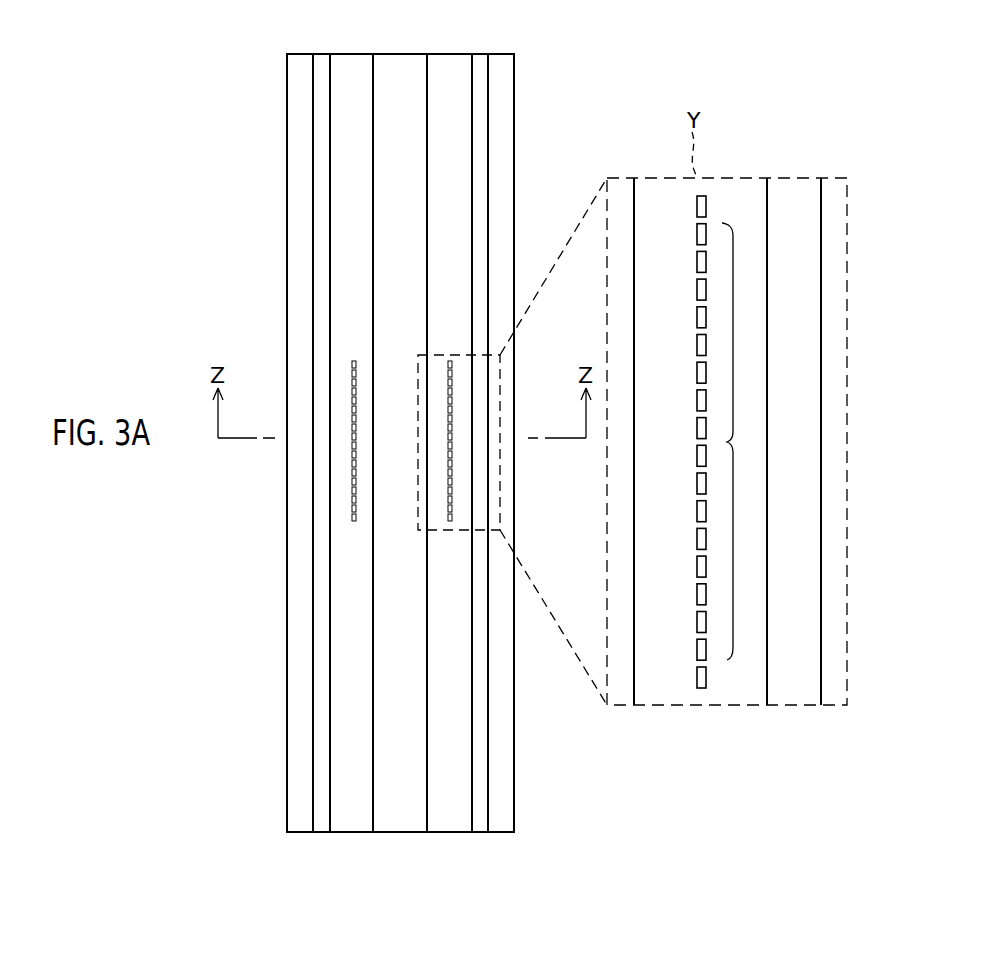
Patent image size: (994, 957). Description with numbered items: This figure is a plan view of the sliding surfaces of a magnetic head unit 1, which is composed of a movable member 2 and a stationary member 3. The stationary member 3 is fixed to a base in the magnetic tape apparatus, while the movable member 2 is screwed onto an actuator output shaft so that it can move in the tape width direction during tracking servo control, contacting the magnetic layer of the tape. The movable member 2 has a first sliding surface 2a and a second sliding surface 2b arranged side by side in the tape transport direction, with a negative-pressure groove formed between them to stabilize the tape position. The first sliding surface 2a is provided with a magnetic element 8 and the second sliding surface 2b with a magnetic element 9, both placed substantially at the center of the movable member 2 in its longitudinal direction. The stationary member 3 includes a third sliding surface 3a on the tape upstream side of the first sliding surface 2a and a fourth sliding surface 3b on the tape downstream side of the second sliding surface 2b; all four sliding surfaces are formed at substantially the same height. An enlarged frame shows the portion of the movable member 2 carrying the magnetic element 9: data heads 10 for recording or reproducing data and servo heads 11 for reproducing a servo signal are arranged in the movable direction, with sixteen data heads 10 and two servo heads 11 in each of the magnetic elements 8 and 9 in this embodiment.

The magnetic head unit 1 is at (251, 70).
The movable member 2 is at (405, 833).
The first sliding surface 2a is at (350, 68).
The second sliding surface 2b is at (445, 68).
The stationary member 3 is at (514, 97).
The third sliding surface 3a is at (298, 136).
The fourth sliding surface 3b is at (497, 68).
The magnetic element 8 is at (352, 472).
The magnetic element 9 is at (452, 472).
The data head 10 is at (735, 442).
The servo head 11 is at (708, 205).